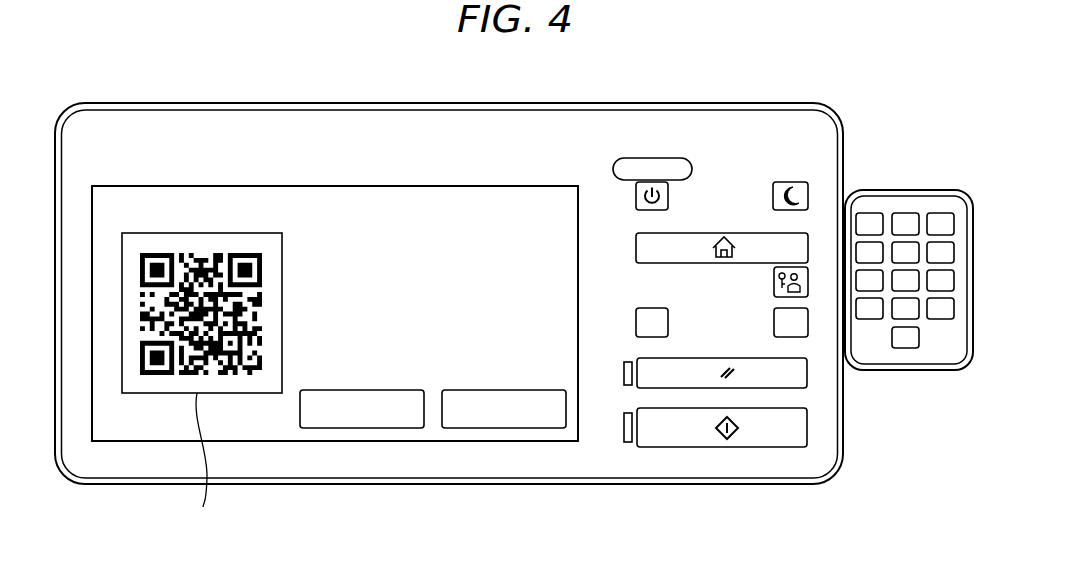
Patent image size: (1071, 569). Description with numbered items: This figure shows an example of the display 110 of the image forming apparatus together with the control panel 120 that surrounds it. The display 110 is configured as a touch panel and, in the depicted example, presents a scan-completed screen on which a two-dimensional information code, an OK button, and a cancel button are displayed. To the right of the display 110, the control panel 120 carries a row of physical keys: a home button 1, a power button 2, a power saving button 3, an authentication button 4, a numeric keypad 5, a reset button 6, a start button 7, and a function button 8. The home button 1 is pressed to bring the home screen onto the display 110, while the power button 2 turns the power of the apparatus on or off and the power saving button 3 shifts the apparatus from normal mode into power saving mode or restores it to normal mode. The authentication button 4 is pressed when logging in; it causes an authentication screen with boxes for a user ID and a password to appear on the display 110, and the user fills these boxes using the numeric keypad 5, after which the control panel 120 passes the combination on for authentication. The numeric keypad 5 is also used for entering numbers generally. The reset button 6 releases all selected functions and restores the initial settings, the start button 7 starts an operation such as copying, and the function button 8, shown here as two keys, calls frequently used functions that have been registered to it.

The control panel 120 is at (922, 530).
The display 110 is at (422, 305).
The home button 1 is at (643, 250).
The power button 2 is at (636, 196).
The power saving button 3 is at (803, 189).
The authentication button 4 is at (808, 282).
The numeric keypad 5 is at (908, 205).
The reset button 6 is at (803, 372).
The start button 7 is at (803, 430).
The function button 8 is at (668, 310).